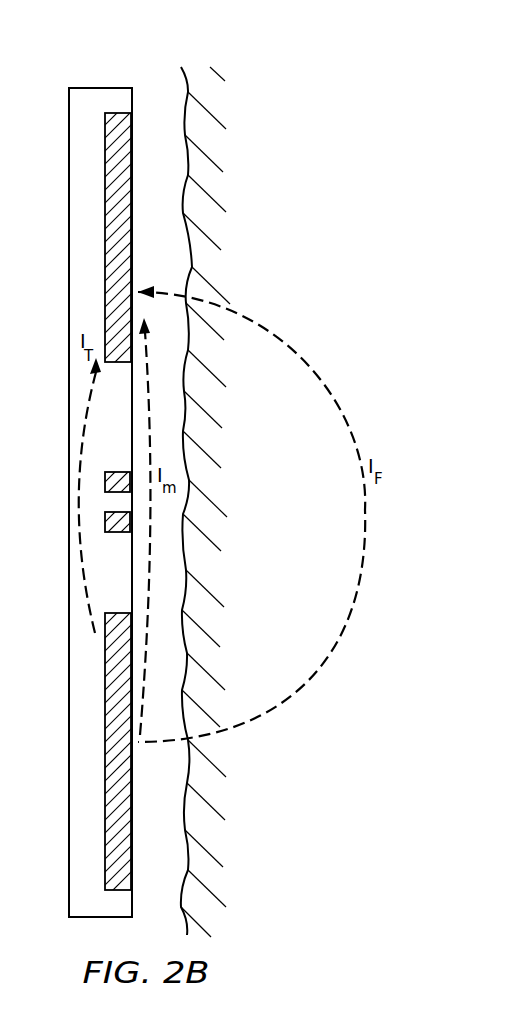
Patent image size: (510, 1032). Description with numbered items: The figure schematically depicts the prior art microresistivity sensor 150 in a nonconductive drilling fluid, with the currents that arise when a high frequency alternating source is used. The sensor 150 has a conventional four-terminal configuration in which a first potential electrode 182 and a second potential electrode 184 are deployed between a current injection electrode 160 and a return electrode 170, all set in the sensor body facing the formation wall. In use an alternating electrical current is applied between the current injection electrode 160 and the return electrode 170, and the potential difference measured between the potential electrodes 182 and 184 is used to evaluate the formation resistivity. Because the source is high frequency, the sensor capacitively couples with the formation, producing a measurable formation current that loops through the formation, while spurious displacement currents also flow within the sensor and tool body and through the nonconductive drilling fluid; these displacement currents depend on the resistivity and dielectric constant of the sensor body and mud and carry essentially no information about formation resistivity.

The microresistivity sensor 150 is at (100, 82).
The return electrode 170 is at (105, 244).
The current injection electrode 160 is at (105, 670).
The first potential electrode 182 is at (112, 472).
The second potential electrode 184 is at (112, 533).